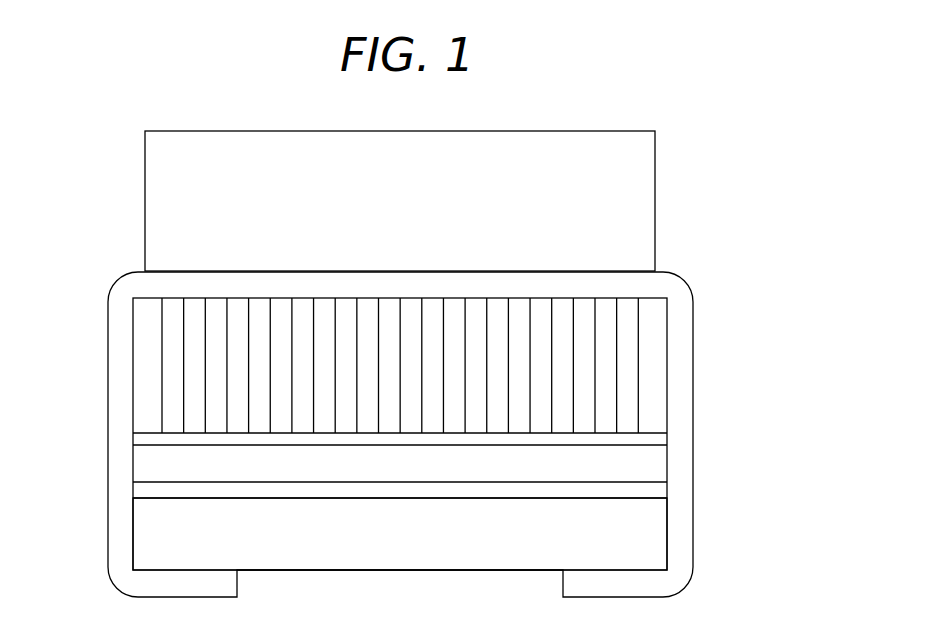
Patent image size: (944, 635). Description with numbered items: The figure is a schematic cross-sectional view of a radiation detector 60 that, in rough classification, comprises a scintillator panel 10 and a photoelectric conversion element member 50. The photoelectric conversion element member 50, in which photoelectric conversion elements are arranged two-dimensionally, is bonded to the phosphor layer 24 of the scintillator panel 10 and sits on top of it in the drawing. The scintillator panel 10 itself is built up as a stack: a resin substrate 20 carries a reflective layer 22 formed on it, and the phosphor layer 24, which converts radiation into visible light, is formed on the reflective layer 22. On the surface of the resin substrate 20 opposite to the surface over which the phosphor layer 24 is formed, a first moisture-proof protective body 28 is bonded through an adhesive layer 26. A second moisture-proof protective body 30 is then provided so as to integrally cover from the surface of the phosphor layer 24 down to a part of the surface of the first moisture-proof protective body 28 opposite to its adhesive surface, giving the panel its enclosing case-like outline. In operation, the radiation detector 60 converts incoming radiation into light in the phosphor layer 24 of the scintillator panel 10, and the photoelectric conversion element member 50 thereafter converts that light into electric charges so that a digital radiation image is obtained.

The radiation detector 60 is at (133, 90).
The photoelectric conversion element member 50 is at (180, 208).
The scintillator panel 10 is at (808, 268).
The second moisture-proof protective body 30 is at (687, 309).
The phosphor layer 24 is at (622, 373).
The reflective layer 22 is at (657, 440).
The resin substrate 20 is at (650, 467).
The adhesive layer 26 is at (657, 492).
The first moisture-proof protective body 28 is at (653, 540).